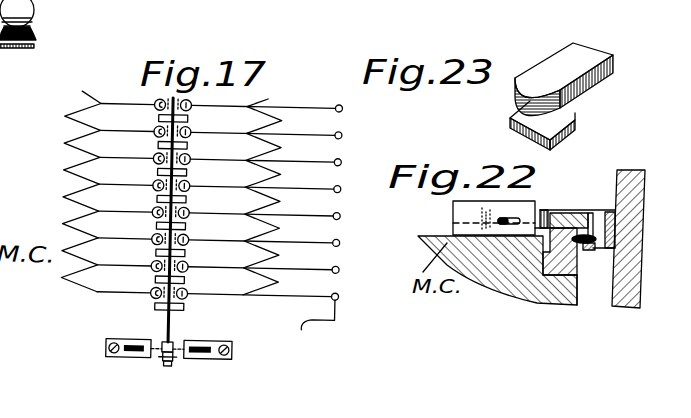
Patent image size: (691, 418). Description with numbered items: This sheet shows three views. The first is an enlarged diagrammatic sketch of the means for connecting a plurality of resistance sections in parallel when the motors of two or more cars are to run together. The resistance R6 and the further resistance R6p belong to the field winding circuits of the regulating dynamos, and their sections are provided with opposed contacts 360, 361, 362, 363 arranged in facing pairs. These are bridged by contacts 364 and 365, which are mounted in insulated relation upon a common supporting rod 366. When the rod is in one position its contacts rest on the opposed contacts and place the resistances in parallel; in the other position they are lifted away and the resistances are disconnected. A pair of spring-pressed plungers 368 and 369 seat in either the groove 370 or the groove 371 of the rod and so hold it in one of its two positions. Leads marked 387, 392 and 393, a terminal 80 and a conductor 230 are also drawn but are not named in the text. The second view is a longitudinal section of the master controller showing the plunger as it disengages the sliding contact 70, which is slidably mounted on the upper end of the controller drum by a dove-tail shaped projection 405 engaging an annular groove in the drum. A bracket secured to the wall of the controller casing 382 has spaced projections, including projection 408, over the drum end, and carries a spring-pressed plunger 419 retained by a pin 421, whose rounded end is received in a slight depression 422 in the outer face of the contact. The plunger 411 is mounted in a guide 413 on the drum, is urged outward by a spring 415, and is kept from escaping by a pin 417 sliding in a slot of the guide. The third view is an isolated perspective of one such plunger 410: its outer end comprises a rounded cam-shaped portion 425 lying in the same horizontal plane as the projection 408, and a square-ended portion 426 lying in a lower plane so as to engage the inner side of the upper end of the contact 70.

In FIG. 17, the common supporting rod 366 is at (180, 331).
In FIG. 17, the contact 364 is at (197, 118).
In FIG. 17, the contact 365 is at (190, 146).
In FIG. 17, the opposed contact 360 is at (155, 132).
In FIG. 17, the opposed contact 361 is at (193, 131).
In FIG. 17, the opposed contact 362 is at (138, 153).
In FIG. 17, the opposed contact 363 is at (198, 159).
In FIG. 17, the lead 387 is at (77, 102).
In FIG. 17, the lead 392 is at (77, 123).
In FIG. 17, the lead 393 is at (77, 145).
In FIG. 17, the terminal 80 is at (343, 294).
In FIG. 17, the conductor 230 is at (320, 322).
In FIG. 17, the groove 370 is at (170, 343).
In FIG. 17, the groove 371 is at (178, 366).
In FIG. 17, the spring-pressed plunger 368 is at (160, 358).
In FIG. 17, the spring-pressed plunger 369 is at (185, 358).
In FIG. 17, the resistance R6 is at (275, 169).
In FIG. 17, the resistance R6p is at (78, 189).
In FIG. 23, the plunger 410 is at (603, 84).
In FIG. 23, the plunger 411 is at (522, 98).
In FIG. 22, the plunger 411 is at (525, 240).
In FIG. 23, the rounded cam-shaped portion 425 is at (558, 118).
In FIG. 22, the rounded cam-shaped portion 425 is at (545, 211).
In FIG. 23, the square-ended portion 426 is at (520, 134).
In FIG. 22, the square-ended portion 426 is at (542, 298).
In FIG. 22, the guide 413 is at (453, 203).
In FIG. 22, the spring 415 is at (453, 223).
In FIG. 22, the pin 417 is at (510, 223).
In FIG. 22, the dove-tail shaped projection 405 is at (578, 300).
In FIG. 22, the projection 408 is at (552, 214).
In FIG. 22, the pin 421 is at (600, 219).
In FIG. 22, the spring-pressed plunger 419 is at (610, 233).
In FIG. 22, the depression 422 is at (578, 258).
In FIG. 22, the contact 70 is at (574, 262).
In FIG. 22, the controller casing 382 is at (645, 282).